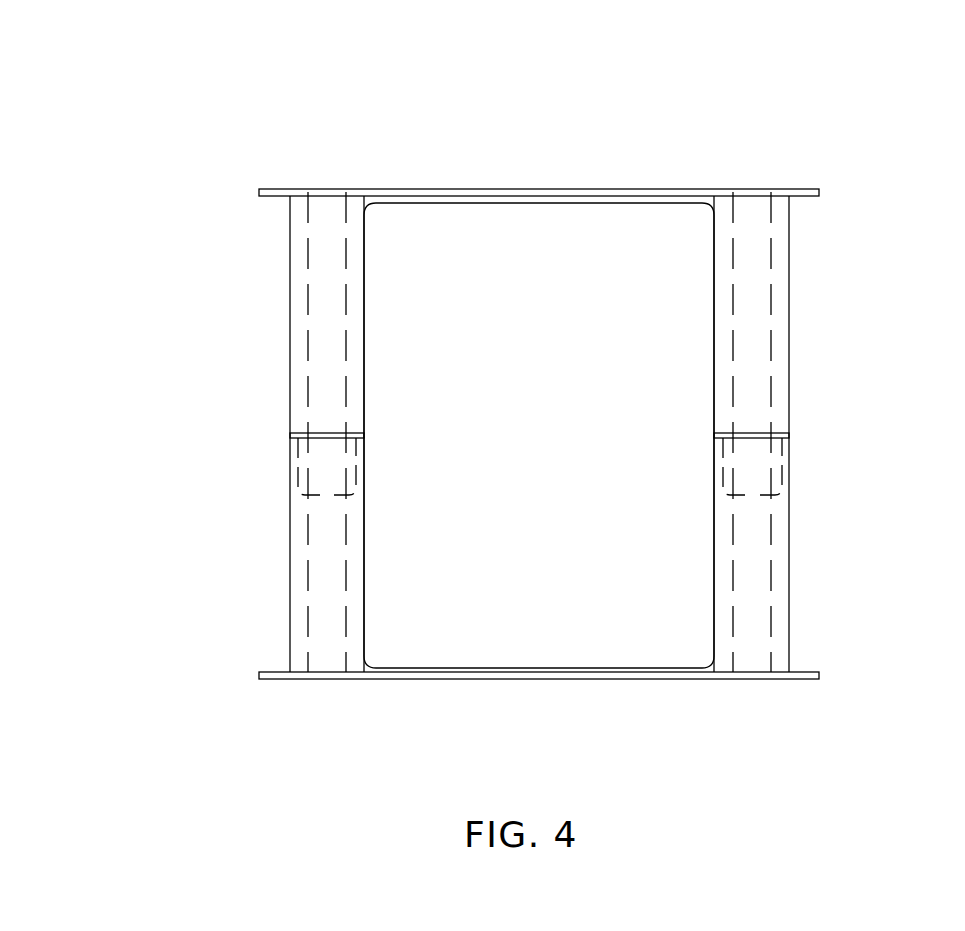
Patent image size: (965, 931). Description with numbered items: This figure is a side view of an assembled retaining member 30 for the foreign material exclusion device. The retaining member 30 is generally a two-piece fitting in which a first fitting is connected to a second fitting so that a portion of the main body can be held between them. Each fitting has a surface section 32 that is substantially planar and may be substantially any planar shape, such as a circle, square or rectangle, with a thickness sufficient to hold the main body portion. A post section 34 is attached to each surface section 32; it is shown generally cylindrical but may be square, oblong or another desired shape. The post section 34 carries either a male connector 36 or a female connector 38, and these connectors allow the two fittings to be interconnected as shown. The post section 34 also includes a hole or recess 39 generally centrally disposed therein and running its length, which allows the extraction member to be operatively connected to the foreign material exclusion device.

The retaining member 30 is at (406, 435).
The surface section 32 is at (539, 405).
The post section 34 is at (260, 432).
The male connector 36 is at (470, 429).
The female connector 38 is at (486, 485).
The recess 39 is at (832, 432).